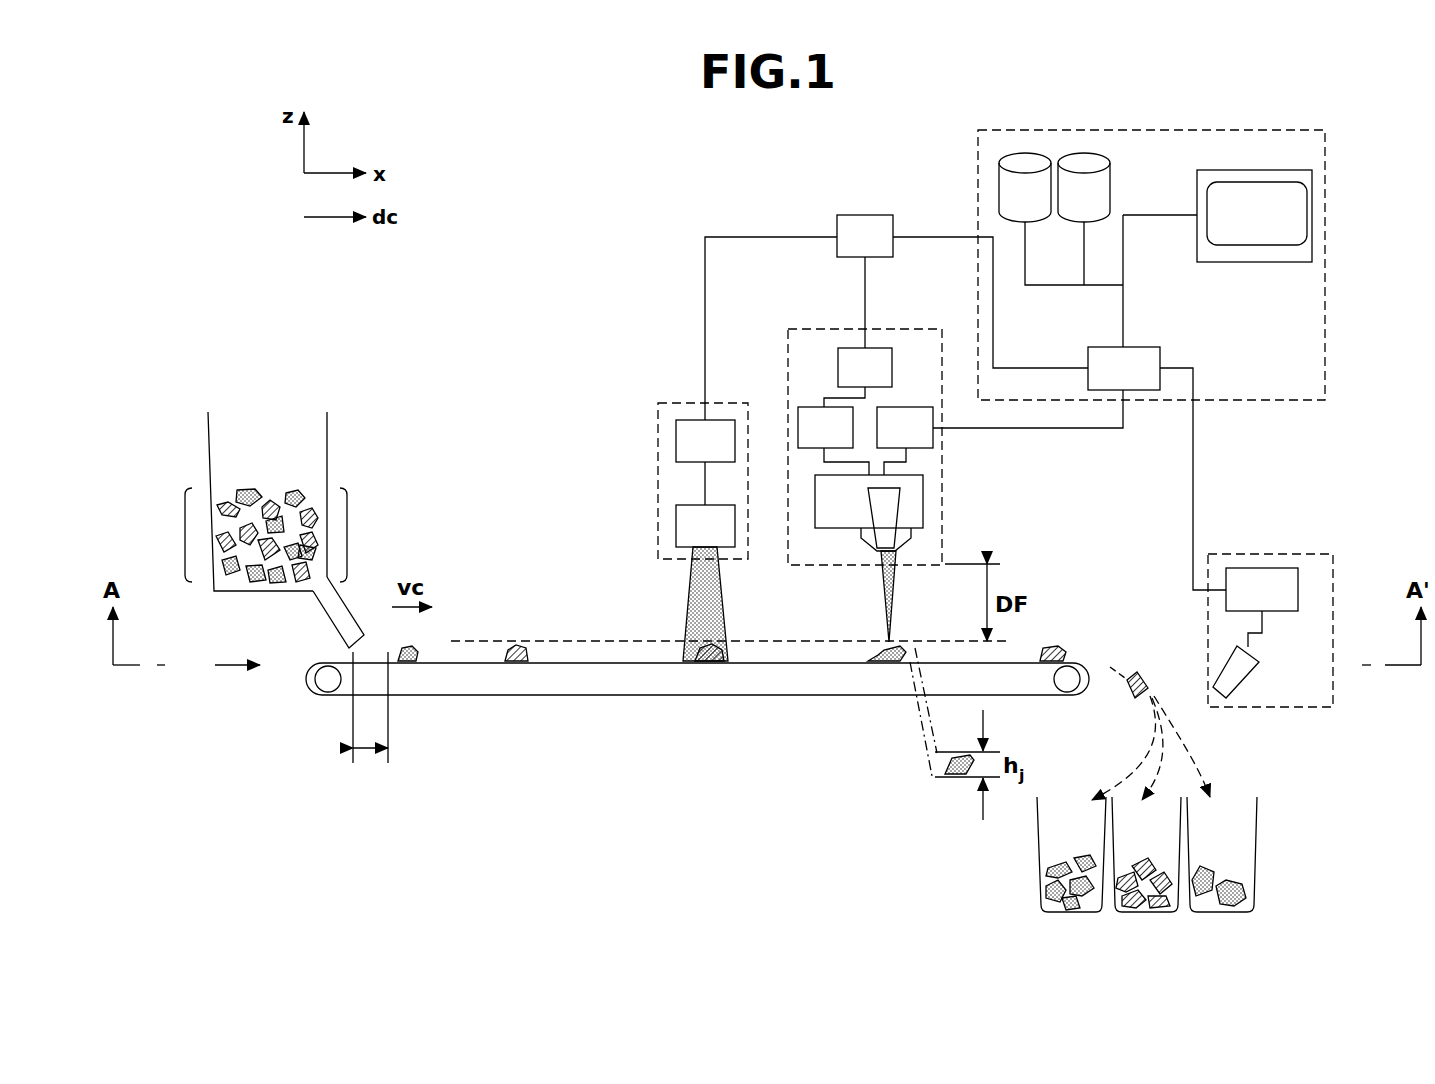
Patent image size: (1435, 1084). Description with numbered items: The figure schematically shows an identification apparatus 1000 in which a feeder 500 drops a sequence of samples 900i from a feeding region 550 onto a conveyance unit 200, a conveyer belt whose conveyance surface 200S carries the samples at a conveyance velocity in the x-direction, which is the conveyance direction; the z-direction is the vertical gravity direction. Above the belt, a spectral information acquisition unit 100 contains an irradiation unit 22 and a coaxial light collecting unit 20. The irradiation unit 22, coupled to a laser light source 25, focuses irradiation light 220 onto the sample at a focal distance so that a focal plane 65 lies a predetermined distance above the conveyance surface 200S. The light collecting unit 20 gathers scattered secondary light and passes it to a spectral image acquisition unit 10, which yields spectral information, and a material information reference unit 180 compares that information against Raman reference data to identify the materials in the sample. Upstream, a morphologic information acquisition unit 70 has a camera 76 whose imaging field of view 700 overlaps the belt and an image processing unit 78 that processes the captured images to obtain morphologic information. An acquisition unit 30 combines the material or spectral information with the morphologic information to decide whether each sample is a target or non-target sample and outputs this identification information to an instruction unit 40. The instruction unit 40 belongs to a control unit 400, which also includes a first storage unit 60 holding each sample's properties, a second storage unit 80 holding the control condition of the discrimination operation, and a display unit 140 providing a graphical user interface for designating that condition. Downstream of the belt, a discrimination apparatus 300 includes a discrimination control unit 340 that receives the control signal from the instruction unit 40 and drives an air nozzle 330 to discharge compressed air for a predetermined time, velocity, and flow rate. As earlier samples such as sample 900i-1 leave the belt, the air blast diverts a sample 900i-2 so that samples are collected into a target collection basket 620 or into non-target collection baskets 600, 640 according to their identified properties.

The identification apparatus 1000 is at (177, 109).
The feeder 500 is at (266, 472).
The sample 900i is at (185, 534).
The conveyance unit 200 is at (313, 662).
The conveyance surface 200S is at (220, 698).
The feeding region 550 is at (369, 721).
The sample 900i-1 is at (1057, 645).
The sample 900i-2 is at (1138, 672).
The focal plane 65 is at (832, 650).
The imaging field of view 700 is at (680, 605).
The irradiation light 220 is at (883, 603).
The morphologic information acquisition unit 70 is at (658, 452).
The camera 76 is at (676, 540).
The image processing unit 78 is at (690, 420).
The acquisition unit 30 is at (866, 215).
The spectral information acquisition unit 100 is at (814, 329).
The material information reference unit 180 is at (884, 348).
The spectral image acquisition unit 10 is at (806, 407).
The light source 25 is at (940, 440).
The light collecting unit 20 is at (925, 490).
The irradiation unit 22 is at (900, 522).
The control unit 400 is at (1200, 130).
The first storage unit 60 is at (1021, 153).
The second storage unit 80 is at (1082, 153).
The display unit 140 is at (1262, 262).
The instruction unit 40 is at (1140, 347).
The discrimination apparatus 300 is at (1298, 554).
The discrimination control unit 340 is at (1243, 568).
The air nozzle 330 is at (1255, 680).
The non-target collection basket 640 is at (1050, 838).
The target collection basket 620 is at (1160, 850).
The non-target collection basket 600 is at (1237, 843).